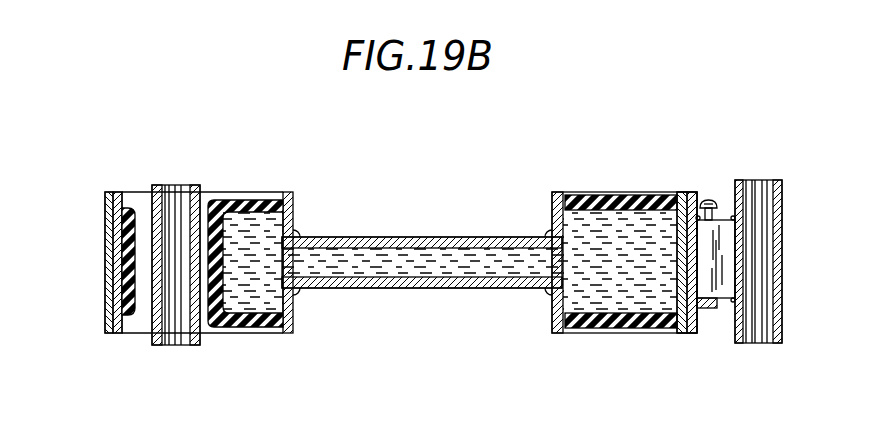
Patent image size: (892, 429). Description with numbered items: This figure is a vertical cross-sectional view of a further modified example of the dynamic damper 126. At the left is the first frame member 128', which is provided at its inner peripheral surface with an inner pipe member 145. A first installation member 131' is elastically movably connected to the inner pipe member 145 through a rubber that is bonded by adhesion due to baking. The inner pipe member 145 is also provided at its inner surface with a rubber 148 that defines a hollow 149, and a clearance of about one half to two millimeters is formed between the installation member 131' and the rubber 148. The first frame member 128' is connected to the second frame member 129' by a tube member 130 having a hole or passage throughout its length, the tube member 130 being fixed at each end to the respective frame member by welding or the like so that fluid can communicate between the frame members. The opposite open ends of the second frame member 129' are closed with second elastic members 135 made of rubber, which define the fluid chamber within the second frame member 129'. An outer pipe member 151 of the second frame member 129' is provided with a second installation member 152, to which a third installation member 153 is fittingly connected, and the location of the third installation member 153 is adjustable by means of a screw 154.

The dynamic damper 126 is at (367, 220).
The first frame member 128' is at (197, 224).
The inner pipe member 145 is at (126, 196).
The first installation member 131' is at (201, 286).
The rubber 148 is at (249, 200).
The hollow 149 is at (253, 262).
The tube member 130 is at (424, 240).
The second frame member 129' is at (624, 225).
The second elastic member 135 is at (634, 205).
The outer pipe member 151 is at (687, 195).
The second installation member 152 is at (722, 297).
The screw 154 is at (710, 202).
The third installation member 153 is at (778, 334).